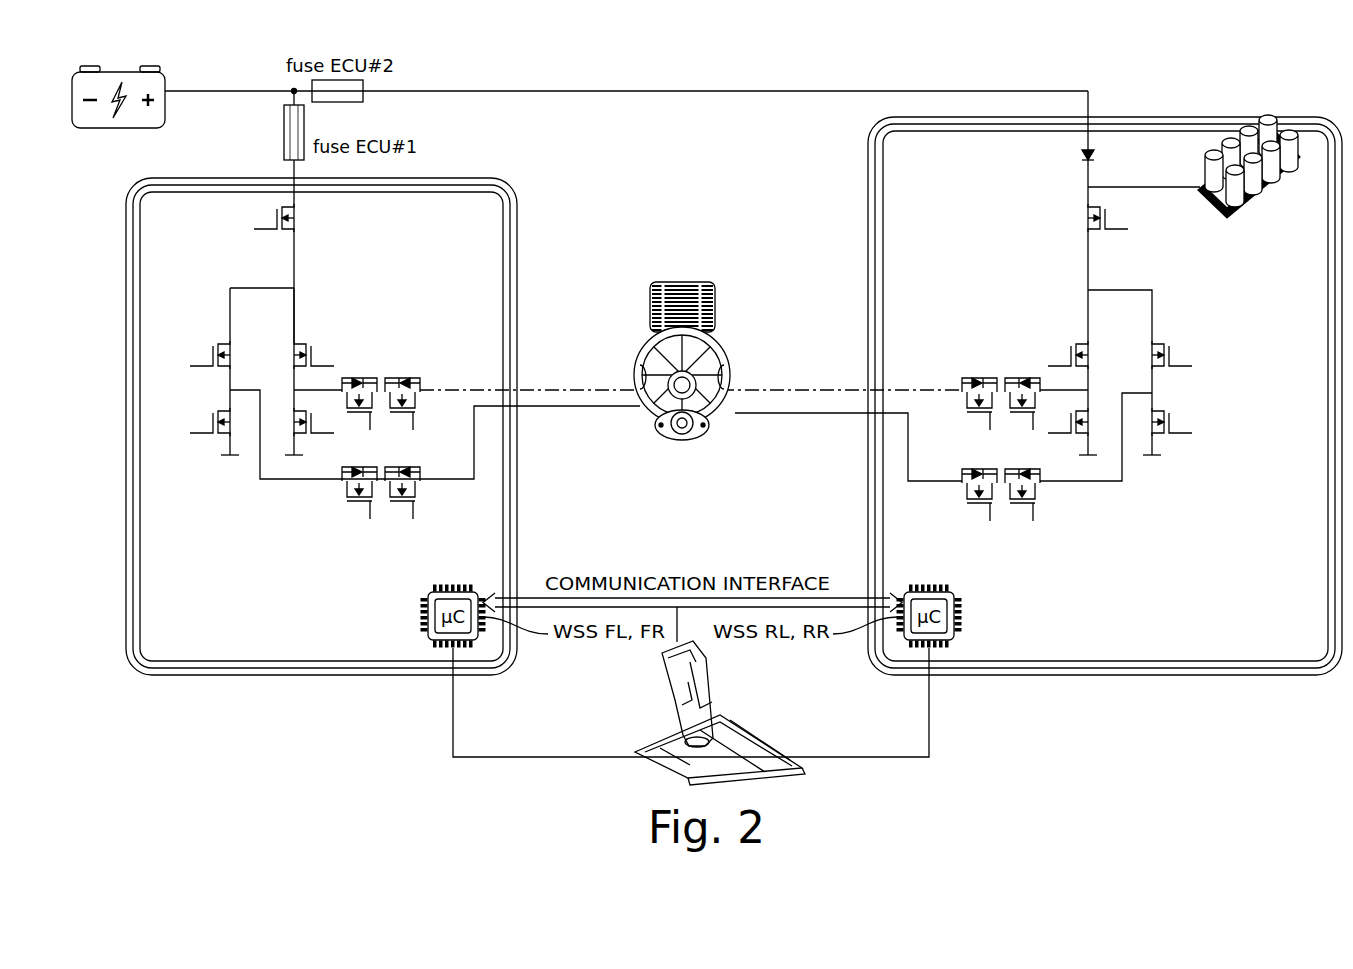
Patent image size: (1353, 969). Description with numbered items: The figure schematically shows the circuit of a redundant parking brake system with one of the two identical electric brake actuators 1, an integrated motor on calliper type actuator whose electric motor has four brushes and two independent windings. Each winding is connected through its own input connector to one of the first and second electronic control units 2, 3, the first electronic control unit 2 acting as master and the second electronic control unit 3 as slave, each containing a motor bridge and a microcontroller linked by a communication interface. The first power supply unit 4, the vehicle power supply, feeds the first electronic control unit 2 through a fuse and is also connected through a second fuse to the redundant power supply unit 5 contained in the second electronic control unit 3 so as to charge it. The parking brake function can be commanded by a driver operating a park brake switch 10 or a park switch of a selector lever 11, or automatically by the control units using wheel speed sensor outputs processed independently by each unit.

The electric brake actuator 1 is at (718, 322).
The first electronic control unit 2 is at (307, 677).
The second electronic control unit 3 is at (1038, 423).
The first power supply unit 4 is at (168, 82).
The redundant power supply unit 5 is at (1263, 188).
The park brake switch 10 is at (650, 747).
The selector lever 11 is at (718, 691).